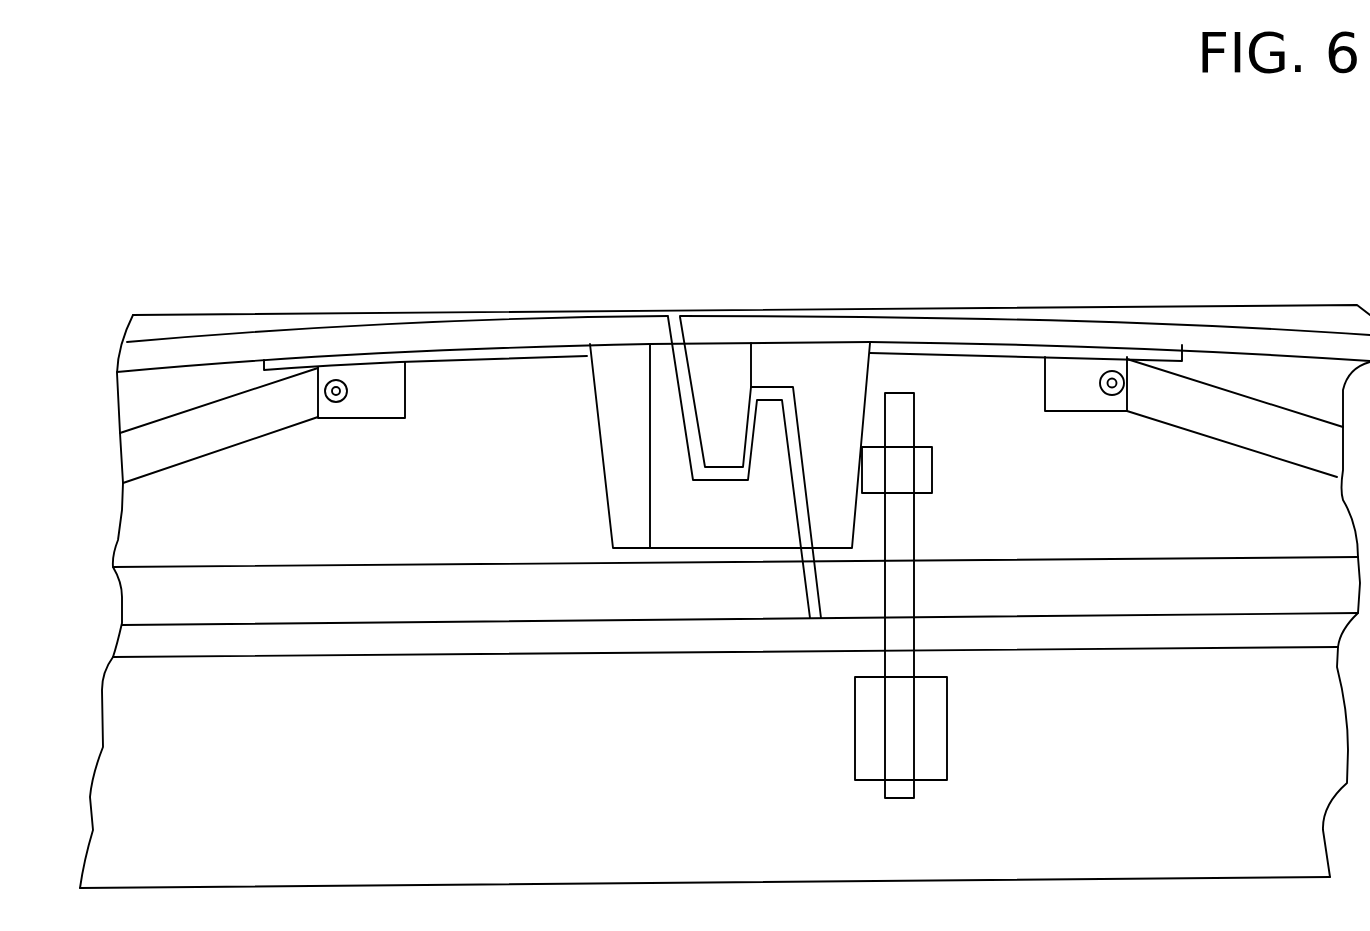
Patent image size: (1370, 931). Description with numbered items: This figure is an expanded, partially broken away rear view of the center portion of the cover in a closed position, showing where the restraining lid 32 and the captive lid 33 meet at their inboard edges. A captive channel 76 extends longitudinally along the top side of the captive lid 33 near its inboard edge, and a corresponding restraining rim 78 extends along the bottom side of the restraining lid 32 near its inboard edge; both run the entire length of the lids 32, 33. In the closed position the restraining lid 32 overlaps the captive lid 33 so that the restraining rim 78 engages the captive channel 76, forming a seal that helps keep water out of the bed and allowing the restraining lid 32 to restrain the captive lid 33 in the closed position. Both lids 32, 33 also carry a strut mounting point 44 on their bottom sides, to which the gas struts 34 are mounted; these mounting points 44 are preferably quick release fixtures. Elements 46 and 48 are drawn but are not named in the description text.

The restraining lid 32 is at (1153, 335).
The captive lid 33 is at (268, 345).
The gas struts 34 is at (198, 437).
The strut mounting point 44 is at (373, 390).
The support channel 46 is at (758, 517).
The fastener rod 48 is at (895, 428).
The captive channel 76 is at (685, 375).
The restraining rim 78 is at (718, 387).